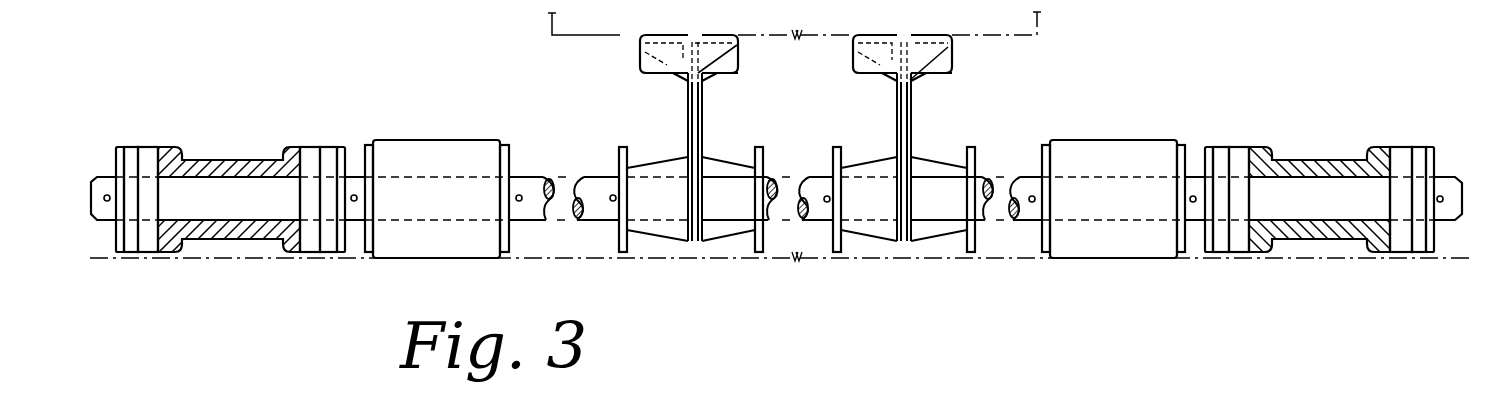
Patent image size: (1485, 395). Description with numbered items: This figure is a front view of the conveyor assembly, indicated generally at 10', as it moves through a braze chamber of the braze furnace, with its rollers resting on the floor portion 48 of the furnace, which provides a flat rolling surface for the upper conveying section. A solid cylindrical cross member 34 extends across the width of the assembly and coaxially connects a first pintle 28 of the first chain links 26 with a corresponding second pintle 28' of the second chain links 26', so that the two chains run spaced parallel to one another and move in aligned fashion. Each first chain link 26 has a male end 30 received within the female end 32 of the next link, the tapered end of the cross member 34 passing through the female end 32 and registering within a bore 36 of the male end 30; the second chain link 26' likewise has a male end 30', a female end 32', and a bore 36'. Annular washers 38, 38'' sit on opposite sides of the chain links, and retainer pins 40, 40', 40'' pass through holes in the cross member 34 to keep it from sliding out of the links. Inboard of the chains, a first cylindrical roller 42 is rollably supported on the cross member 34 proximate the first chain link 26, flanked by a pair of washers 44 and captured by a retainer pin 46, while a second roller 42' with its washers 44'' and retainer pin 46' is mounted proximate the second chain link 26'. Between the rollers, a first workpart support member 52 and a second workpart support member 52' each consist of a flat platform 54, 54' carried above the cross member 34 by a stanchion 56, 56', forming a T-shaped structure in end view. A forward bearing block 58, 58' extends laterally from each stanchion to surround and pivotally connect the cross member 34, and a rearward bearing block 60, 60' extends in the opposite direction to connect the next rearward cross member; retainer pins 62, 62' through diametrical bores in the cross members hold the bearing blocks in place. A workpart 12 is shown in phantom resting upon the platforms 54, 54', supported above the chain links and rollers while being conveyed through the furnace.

The conveyor assembly 10' is at (1127, 76).
The workpart 12 is at (548, 38).
The first chain link 26 is at (229, 273).
The second chain link 26' is at (1323, 275).
The first pintle 28 is at (229, 154).
The second pintle 28' is at (1319, 168).
The male end 30 is at (229, 164).
The male end 30' is at (1320, 170).
The female end 32 is at (230, 169).
The female end 32' is at (1319, 170).
The cross member 34 is at (806, 182).
The bore 36 is at (231, 184).
The bore 36' is at (1315, 170).
The annular washer 38 is at (243, 158).
The annular washer 38'' is at (1339, 159).
The retainer pin 40 is at (263, 237).
The retainer pin 40' is at (1193, 239).
The retainer pin 40'' is at (1442, 237).
The first cylindrical roller 42 is at (436, 177).
The second roller 42' is at (1113, 181).
The washers 44 is at (466, 161).
The washers 44'' is at (1135, 162).
The retainer pin 46 is at (536, 173).
The retainer pin 46' is at (1020, 239).
The floor portion 48 is at (537, 258).
The first workpart support member 52 is at (653, 60).
The second workpart support member 52' is at (929, 76).
The flat platform 54 is at (758, 53).
The platform 54' is at (981, 49).
The stanchion 56 is at (725, 141).
The stanchion 56' is at (867, 141).
The forward bearing block 58 is at (691, 224).
The forward bearing block 58' is at (904, 226).
The rearward bearing block 60 is at (697, 229).
The rearward bearing block 60' is at (913, 229).
The retainer pins 62 is at (598, 174).
The retainer pins 62' is at (810, 239).